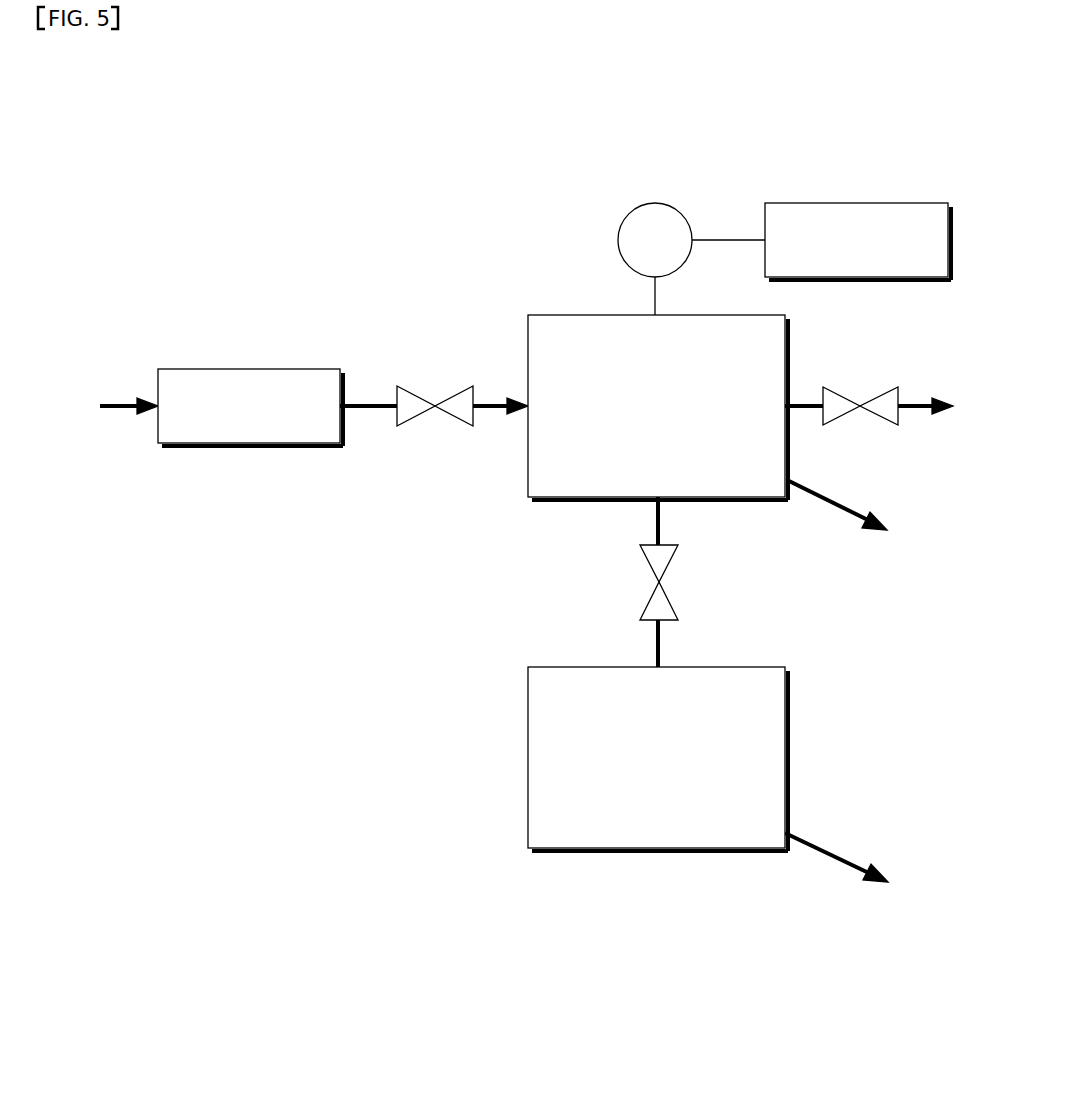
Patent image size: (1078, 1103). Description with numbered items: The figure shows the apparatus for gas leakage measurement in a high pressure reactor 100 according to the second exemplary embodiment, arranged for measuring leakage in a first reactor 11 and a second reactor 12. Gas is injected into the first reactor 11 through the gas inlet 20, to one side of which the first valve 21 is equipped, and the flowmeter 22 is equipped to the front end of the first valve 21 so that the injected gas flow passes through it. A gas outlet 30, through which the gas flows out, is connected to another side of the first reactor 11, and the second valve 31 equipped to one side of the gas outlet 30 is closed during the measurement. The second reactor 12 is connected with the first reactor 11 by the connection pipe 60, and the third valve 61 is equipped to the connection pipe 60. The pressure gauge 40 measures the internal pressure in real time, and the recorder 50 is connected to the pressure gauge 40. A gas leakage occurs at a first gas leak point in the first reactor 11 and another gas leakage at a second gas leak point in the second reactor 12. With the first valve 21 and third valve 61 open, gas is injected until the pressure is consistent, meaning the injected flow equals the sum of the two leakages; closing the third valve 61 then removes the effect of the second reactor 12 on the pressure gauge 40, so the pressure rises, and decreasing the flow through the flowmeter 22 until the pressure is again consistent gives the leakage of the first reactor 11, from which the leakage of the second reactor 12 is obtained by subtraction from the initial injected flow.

The apparatus for gas leakage measurement in a high pressure reactor 100 is at (333, 160).
The first reactor 11 is at (560, 313).
The second reactor 12 is at (528, 757).
The gas inlet 20 is at (490, 403).
The first valve 21 is at (418, 418).
The flowmeter 22 is at (252, 369).
The gas outlet 30 is at (806, 403).
The second valve 31 is at (877, 420).
The pressure gauge 40 is at (648, 203).
The recorder 50 is at (857, 203).
The connection pipe 60 is at (657, 637).
The third valve 61 is at (647, 568).